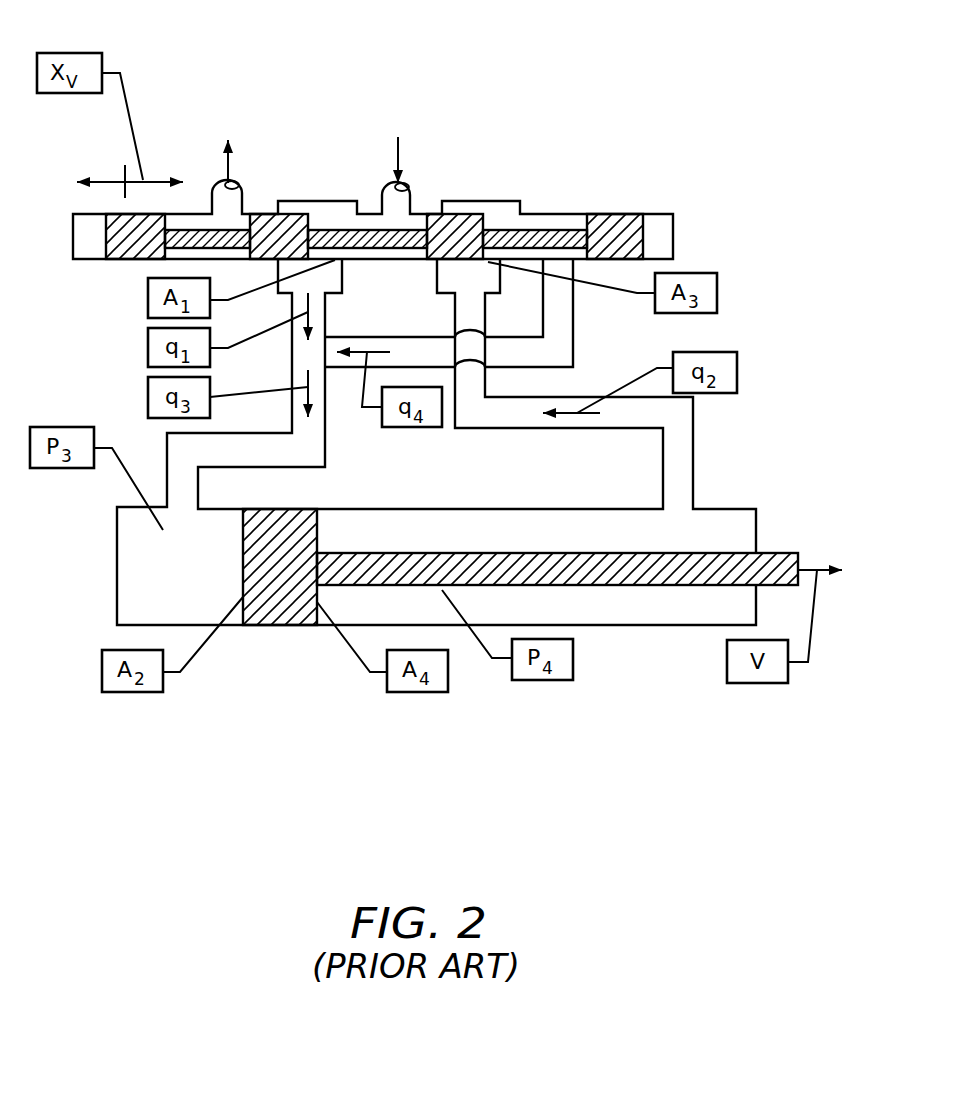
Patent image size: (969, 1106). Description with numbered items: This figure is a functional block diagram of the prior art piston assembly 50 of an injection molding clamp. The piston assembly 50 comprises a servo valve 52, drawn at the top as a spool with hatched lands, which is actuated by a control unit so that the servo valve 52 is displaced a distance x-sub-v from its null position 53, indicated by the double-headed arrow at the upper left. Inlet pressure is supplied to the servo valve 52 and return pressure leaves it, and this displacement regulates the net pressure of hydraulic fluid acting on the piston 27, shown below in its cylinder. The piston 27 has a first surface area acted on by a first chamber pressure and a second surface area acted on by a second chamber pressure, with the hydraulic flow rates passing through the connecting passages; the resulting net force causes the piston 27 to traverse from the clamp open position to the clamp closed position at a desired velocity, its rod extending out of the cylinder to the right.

The piston assembly 50 is at (663, 31).
The servo valve 52 is at (620, 225).
The null position 53 is at (125, 168).
The piston 27 is at (768, 552).